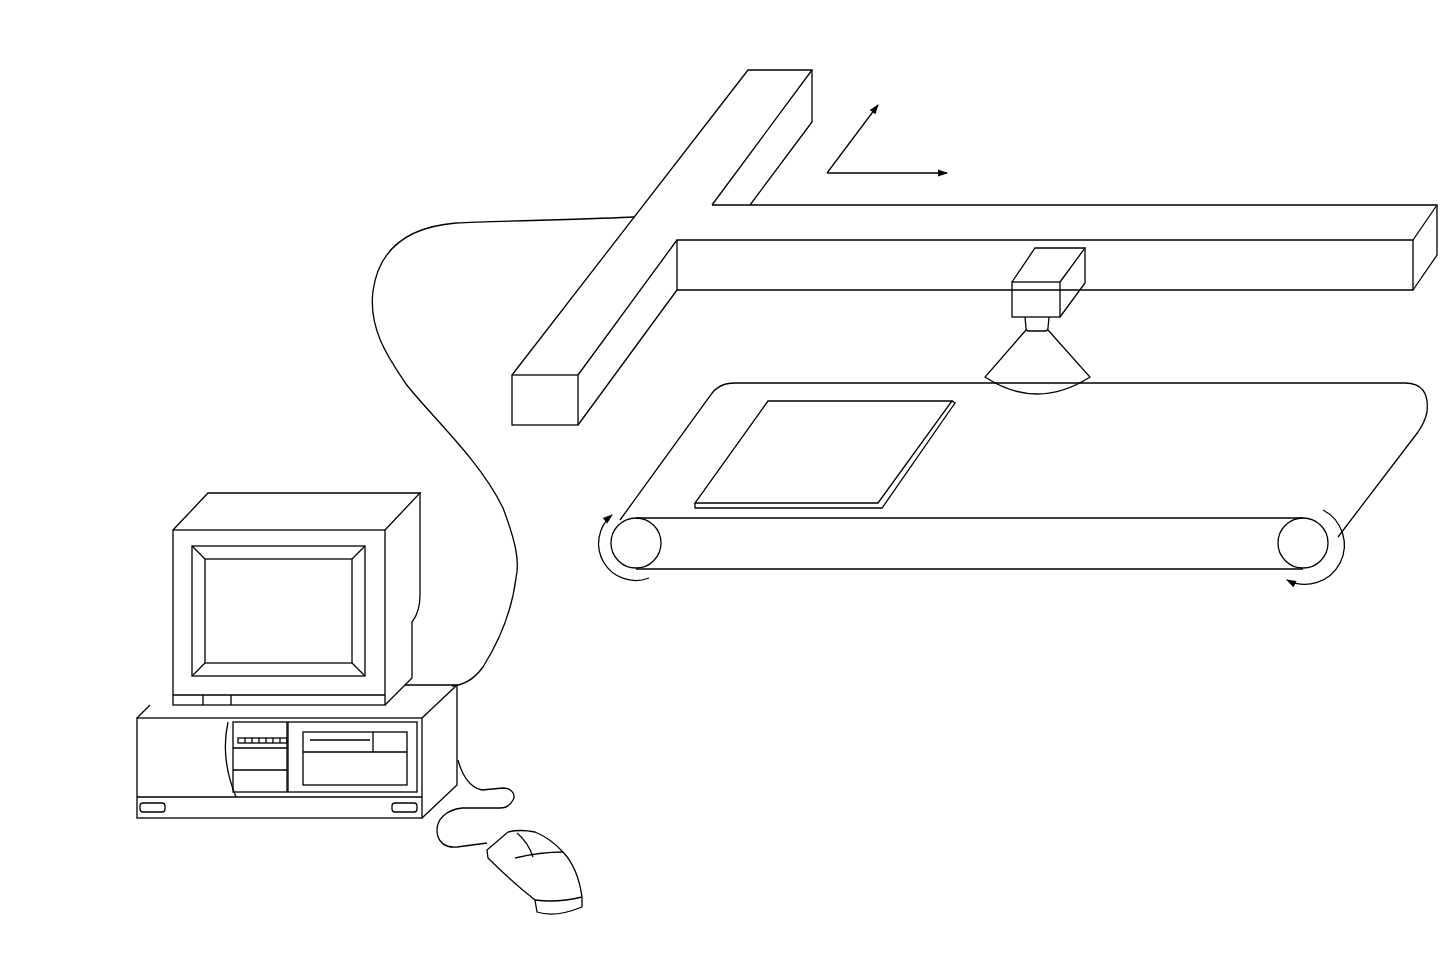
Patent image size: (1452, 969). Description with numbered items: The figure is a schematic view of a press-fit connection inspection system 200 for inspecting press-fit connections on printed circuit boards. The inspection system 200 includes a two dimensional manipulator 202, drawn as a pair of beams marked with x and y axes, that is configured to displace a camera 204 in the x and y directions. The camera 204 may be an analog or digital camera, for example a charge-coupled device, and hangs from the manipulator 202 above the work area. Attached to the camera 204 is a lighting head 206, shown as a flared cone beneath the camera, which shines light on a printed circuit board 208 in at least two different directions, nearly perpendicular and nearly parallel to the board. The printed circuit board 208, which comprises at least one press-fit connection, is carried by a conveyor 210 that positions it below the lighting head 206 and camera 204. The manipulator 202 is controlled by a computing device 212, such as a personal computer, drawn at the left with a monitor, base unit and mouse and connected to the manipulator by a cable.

The press-fit connection inspection system 200 is at (227, 138).
The two dimensional manipulator 202 is at (632, 182).
The camera 204 is at (1072, 293).
The lighting head 206 is at (1012, 357).
The printed circuit board 208 is at (835, 413).
The conveyor 210 is at (1302, 393).
The computing device 212 is at (162, 508).